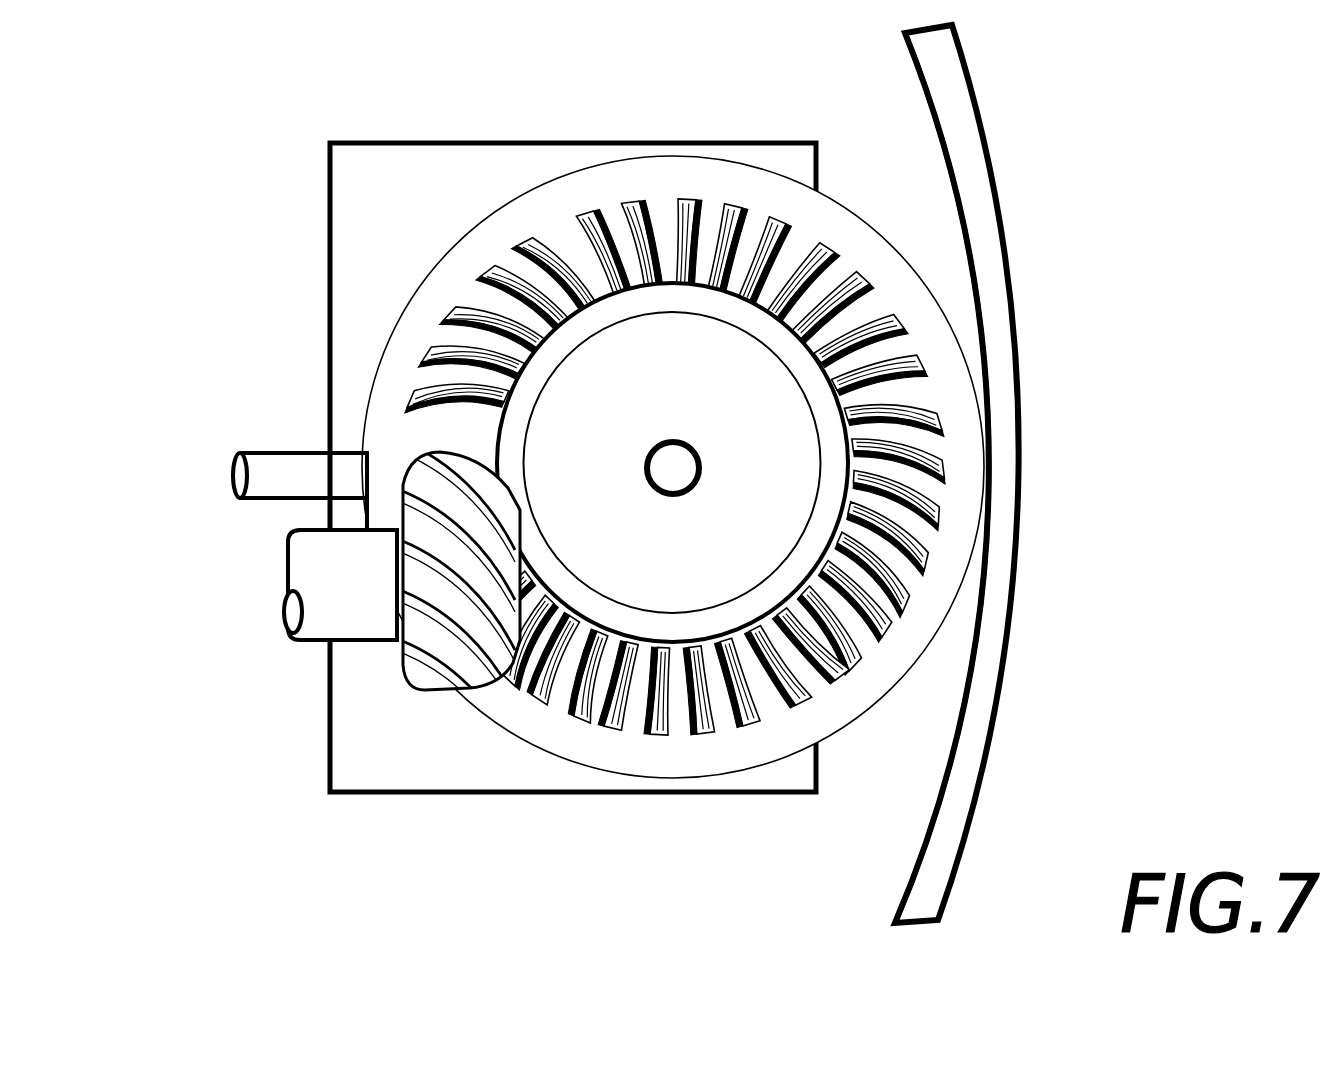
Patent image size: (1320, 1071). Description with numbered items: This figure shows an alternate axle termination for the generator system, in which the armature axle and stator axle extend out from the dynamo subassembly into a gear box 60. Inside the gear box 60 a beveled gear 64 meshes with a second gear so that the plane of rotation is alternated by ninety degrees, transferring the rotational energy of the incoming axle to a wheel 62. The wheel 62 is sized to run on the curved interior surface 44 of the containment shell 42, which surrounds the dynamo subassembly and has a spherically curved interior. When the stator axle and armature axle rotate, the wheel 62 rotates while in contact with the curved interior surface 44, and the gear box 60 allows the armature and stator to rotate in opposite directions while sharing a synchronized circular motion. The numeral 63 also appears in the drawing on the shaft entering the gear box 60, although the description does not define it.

The gear box 60 is at (512, 143).
The wheel 62 is at (866, 712).
The beveled gear 64 is at (450, 338).
The pinion shaft 63 is at (264, 452).
The curved interior surface 44 is at (928, 110).
The containment shell 42 is at (970, 831).